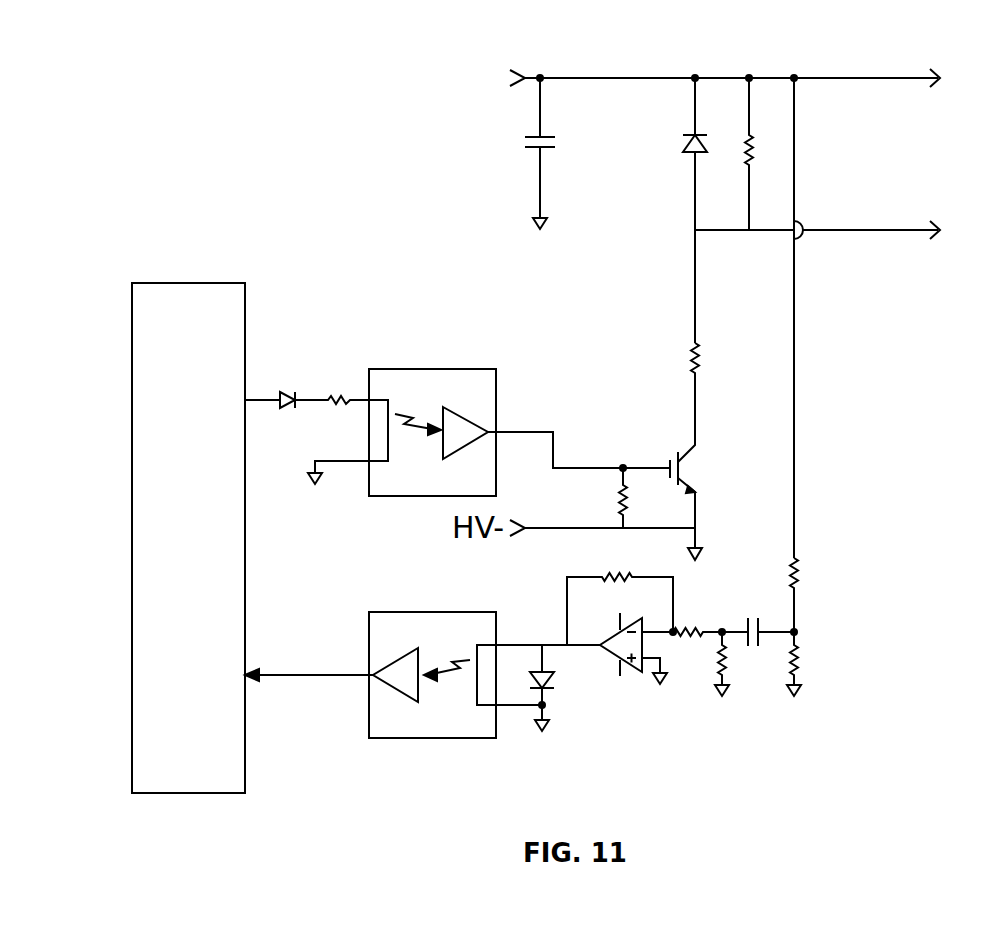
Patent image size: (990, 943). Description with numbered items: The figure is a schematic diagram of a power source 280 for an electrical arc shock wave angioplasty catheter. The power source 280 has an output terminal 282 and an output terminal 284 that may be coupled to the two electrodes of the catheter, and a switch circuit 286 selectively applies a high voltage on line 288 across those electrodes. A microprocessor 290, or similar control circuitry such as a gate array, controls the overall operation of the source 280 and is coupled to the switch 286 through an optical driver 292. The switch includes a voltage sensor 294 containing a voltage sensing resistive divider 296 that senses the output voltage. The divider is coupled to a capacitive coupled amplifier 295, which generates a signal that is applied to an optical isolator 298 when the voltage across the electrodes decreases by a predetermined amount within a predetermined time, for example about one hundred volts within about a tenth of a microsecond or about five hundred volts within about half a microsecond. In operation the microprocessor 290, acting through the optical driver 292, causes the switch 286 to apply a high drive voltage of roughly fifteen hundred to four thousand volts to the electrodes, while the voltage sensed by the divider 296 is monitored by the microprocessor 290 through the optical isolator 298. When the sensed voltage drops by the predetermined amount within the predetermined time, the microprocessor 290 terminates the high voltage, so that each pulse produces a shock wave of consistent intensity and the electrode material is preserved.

The power source 280 is at (408, 256).
The output terminal 282 is at (862, 78).
The output terminal 284 is at (864, 232).
The switch circuit 286 is at (653, 400).
The line 288 is at (612, 78).
The microprocessor 290 is at (147, 602).
The optical driver 292 is at (437, 383).
The voltage sensor 294 is at (767, 706).
The capacitive coupled amplifier 295 is at (612, 657).
The voltage sensing resistive divider 296 is at (840, 557).
The optical isolator 298 is at (437, 625).